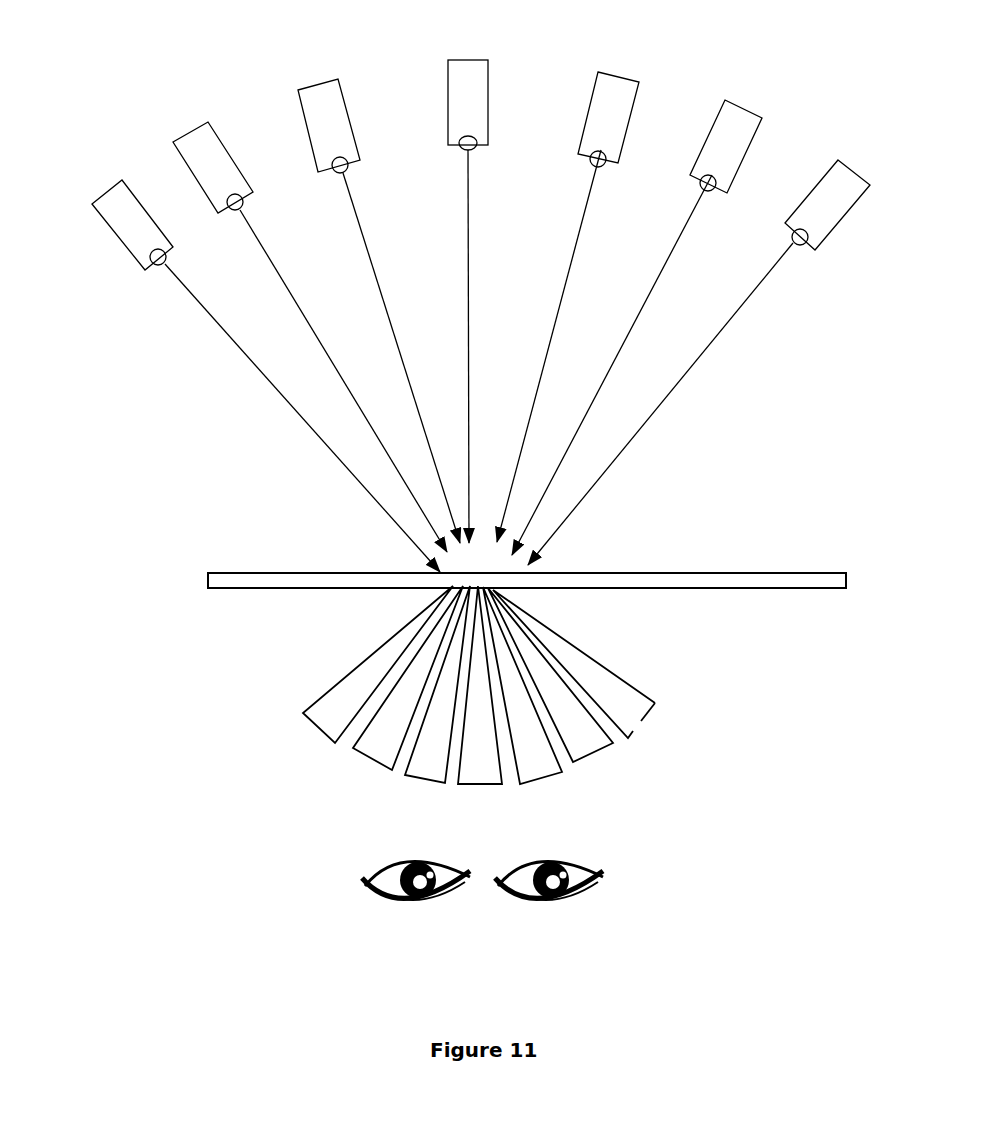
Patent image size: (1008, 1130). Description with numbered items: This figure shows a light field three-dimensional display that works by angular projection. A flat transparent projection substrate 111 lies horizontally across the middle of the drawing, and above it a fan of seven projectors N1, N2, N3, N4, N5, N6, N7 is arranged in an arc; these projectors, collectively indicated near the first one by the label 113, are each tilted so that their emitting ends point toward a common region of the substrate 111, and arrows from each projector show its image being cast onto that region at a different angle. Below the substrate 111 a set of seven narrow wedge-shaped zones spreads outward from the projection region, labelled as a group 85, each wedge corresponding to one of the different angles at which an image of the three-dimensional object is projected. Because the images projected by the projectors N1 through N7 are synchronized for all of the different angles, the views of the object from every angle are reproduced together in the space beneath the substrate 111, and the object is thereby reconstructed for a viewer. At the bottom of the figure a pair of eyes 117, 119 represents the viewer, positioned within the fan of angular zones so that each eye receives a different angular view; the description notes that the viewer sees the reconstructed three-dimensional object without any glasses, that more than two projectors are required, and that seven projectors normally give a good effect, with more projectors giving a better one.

The transparent projection substrate 111 is at (479, 581).
The light sources 113 is at (461, 291).
The viewing zones 85 is at (437, 710).
The left eye 117 is at (416, 928).
The right eye 119 is at (549, 928).
The projector N1 is at (248, 364).
The projector N2 is at (296, 321).
The projector N3 is at (371, 290).
The projector N4 is at (468, 276).
The projector N5 is at (568, 282).
The projector N6 is at (643, 300).
The projector N7 is at (708, 339).